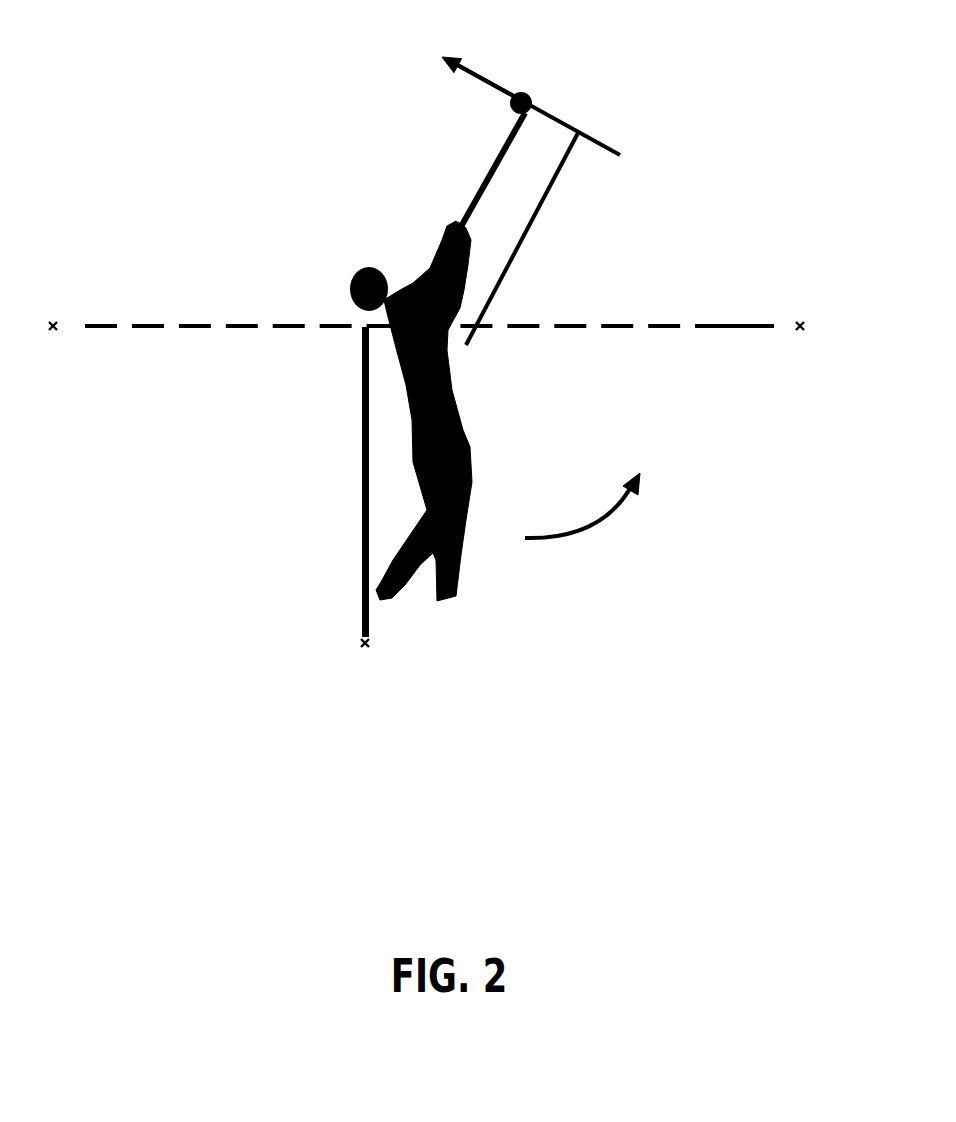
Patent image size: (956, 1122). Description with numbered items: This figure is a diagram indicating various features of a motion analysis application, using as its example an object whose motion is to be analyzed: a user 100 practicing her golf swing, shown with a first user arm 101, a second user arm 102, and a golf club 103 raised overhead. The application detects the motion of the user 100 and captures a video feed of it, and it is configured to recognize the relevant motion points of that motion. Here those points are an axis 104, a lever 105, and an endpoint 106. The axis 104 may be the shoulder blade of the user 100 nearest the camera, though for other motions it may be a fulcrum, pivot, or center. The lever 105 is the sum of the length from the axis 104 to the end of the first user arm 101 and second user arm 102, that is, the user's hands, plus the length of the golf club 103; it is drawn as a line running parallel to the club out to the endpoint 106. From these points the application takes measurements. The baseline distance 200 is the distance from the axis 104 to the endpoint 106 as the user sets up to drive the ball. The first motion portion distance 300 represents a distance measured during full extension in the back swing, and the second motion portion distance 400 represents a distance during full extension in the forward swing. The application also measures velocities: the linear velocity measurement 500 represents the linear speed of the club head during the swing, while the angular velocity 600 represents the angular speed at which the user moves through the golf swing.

The user 100 is at (399, 400).
The first user arm 101 is at (443, 264).
The second user arm 102 is at (463, 280).
The golf club 103 is at (490, 173).
The axis 104 is at (380, 338).
The lever 105 is at (565, 167).
The endpoint 106 is at (488, 78).
The baseline distance 200 is at (363, 603).
The first motion portion distance 300 is at (118, 326).
The second motion portion distance 400 is at (723, 326).
The linear velocity measurement 500 is at (558, 80).
The angular velocity 600 is at (592, 525).